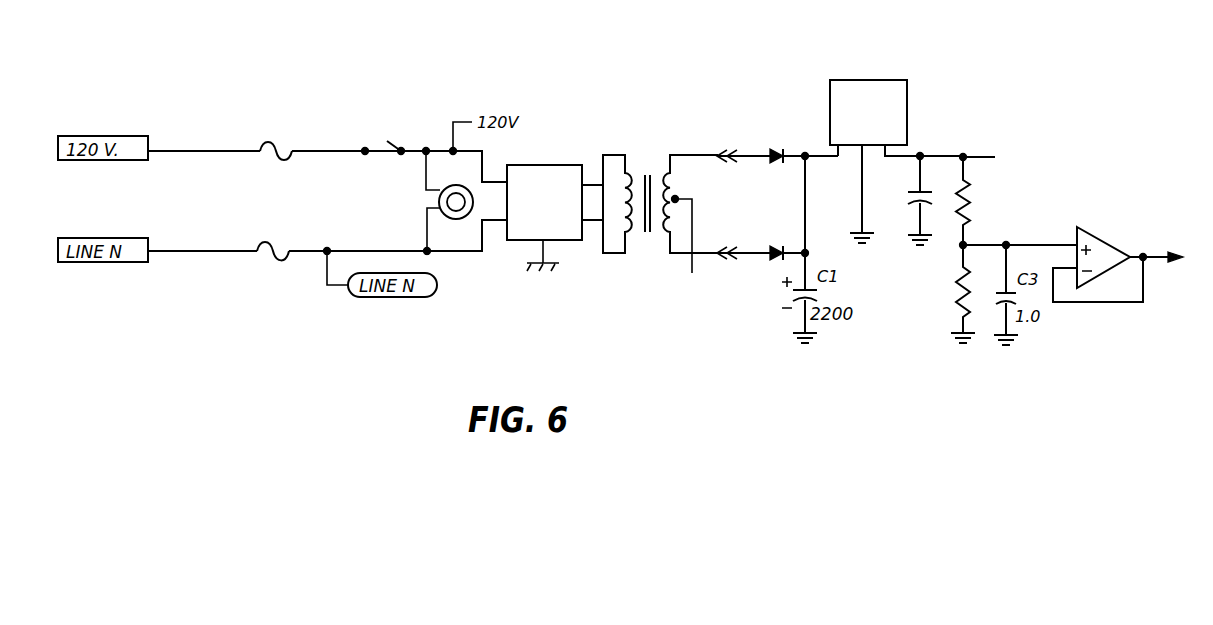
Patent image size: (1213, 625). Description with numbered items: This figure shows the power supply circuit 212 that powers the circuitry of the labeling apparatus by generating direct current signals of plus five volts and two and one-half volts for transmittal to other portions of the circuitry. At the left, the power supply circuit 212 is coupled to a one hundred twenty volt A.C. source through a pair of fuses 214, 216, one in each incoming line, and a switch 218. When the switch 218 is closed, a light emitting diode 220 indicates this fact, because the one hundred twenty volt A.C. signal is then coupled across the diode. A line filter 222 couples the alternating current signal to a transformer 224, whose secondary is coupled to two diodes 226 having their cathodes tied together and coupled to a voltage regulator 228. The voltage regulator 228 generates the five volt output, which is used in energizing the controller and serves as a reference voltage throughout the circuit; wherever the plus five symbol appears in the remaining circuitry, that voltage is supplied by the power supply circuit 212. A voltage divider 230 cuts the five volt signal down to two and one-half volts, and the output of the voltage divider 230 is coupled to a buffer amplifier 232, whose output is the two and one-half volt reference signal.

The power supply circuit 212 is at (652, 100).
The fuse 214 is at (271, 149).
The fuse 216 is at (283, 256).
The switch 218 is at (387, 141).
The light emitting diode 220 is at (432, 209).
The line filter 222 is at (562, 236).
The transformer 224 is at (637, 252).
The diodes 226 is at (778, 164).
The voltage regulator 228 is at (852, 80).
The voltage divider 230 is at (890, 285).
The buffer amplifier 232 is at (1100, 240).